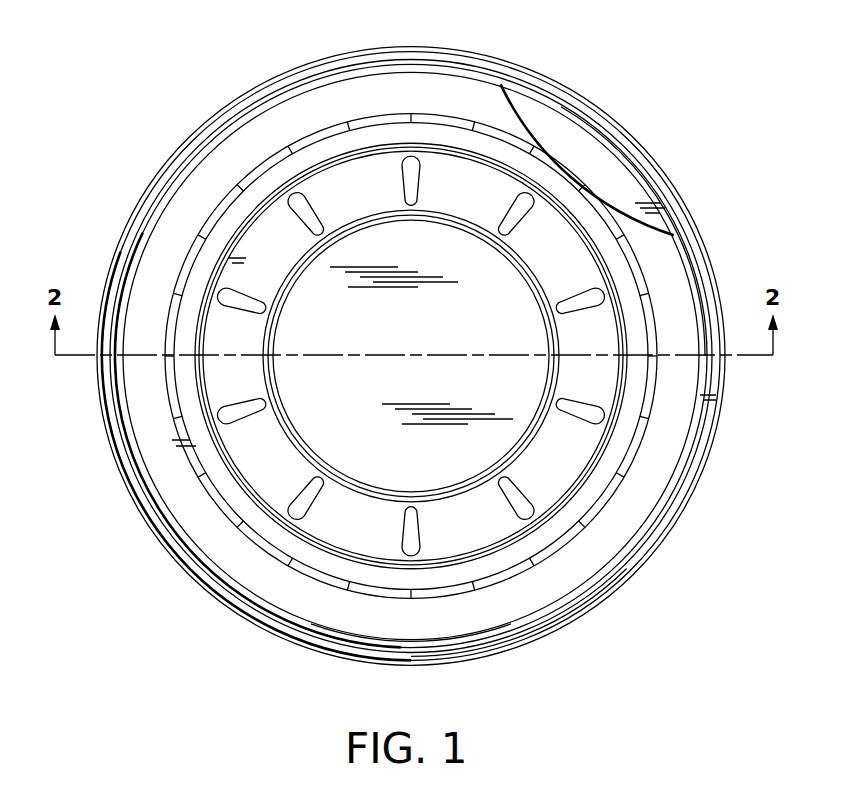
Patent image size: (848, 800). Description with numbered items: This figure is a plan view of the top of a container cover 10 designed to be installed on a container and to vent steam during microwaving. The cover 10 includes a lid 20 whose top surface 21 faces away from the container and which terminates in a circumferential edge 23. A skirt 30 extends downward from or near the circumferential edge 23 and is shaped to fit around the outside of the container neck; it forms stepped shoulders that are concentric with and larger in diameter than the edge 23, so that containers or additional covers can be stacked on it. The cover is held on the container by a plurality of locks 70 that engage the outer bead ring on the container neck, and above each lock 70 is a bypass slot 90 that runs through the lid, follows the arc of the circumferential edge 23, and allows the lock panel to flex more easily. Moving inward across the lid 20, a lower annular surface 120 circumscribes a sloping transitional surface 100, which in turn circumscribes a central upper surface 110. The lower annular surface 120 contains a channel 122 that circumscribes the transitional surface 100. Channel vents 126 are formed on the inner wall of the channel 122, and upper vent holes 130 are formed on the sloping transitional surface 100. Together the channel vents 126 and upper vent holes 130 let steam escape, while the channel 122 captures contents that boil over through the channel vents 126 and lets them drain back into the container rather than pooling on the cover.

The container cover 10 is at (692, 126).
The lid 20 is at (203, 238).
The top surface 21 is at (515, 143).
The circumferential edge 23 is at (682, 203).
The skirt 30 is at (537, 633).
The lock 70 is at (578, 597).
The bypass slot 90 is at (493, 632).
The sloping transitional surface 100 is at (380, 170).
The central upper surface 110 is at (433, 243).
The lower annular surface 120 is at (333, 133).
The channel 122 is at (232, 497).
The channel vents 126 is at (387, 565).
The upper vent holes 130 is at (297, 200).